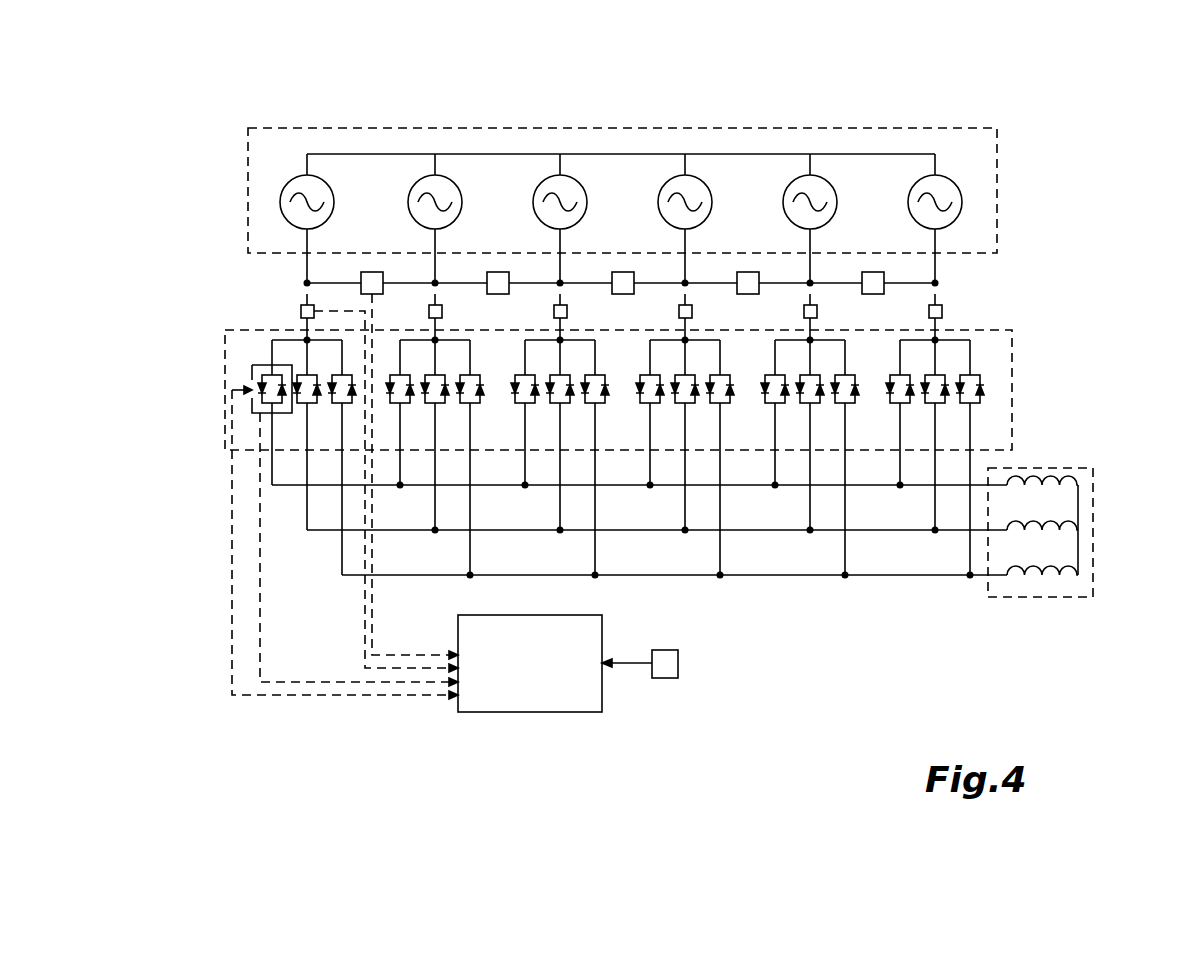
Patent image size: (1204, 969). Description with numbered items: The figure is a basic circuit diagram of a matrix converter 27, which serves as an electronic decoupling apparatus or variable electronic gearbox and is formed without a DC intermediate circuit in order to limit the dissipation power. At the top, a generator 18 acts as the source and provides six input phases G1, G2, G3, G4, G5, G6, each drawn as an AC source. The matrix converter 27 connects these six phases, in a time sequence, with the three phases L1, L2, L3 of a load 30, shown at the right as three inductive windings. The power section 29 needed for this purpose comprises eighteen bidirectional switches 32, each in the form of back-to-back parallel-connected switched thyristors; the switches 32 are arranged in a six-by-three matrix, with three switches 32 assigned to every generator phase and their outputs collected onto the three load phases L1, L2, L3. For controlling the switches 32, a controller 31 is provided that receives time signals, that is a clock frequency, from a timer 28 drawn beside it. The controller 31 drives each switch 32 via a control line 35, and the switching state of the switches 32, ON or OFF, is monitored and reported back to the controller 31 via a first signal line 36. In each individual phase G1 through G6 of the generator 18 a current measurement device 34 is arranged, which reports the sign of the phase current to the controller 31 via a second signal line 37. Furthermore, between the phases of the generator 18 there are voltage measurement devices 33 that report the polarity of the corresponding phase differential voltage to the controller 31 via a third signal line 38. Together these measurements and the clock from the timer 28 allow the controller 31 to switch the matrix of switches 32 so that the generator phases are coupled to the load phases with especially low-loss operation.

The generator 18 is at (997, 198).
The first generator phase G1 is at (302, 178).
The second generator phase G2 is at (430, 178).
The third generator phase G3 is at (555, 178).
The fourth generator phase G4 is at (680, 178).
The fifth generator phase G5 is at (805, 178).
The sixth generator phase G6 is at (930, 178).
The matrix converter 27 is at (1040, 317).
The timer 28 is at (668, 680).
The power section 29 is at (1012, 393).
The load 30 is at (1071, 563).
The first load phase L1 is at (1047, 488).
The second load phase L2 is at (1047, 533).
The third load phase L3 is at (1045, 580).
The controller 31 is at (530, 663).
The bidirectional switch 32 is at (258, 365).
The voltage measurement device 33 is at (372, 272).
The current measurement device 34 is at (300, 308).
The control line 35 is at (240, 637).
The first signal line 36 is at (262, 656).
The second signal line 37 is at (365, 640).
The third signal line 38 is at (373, 605).